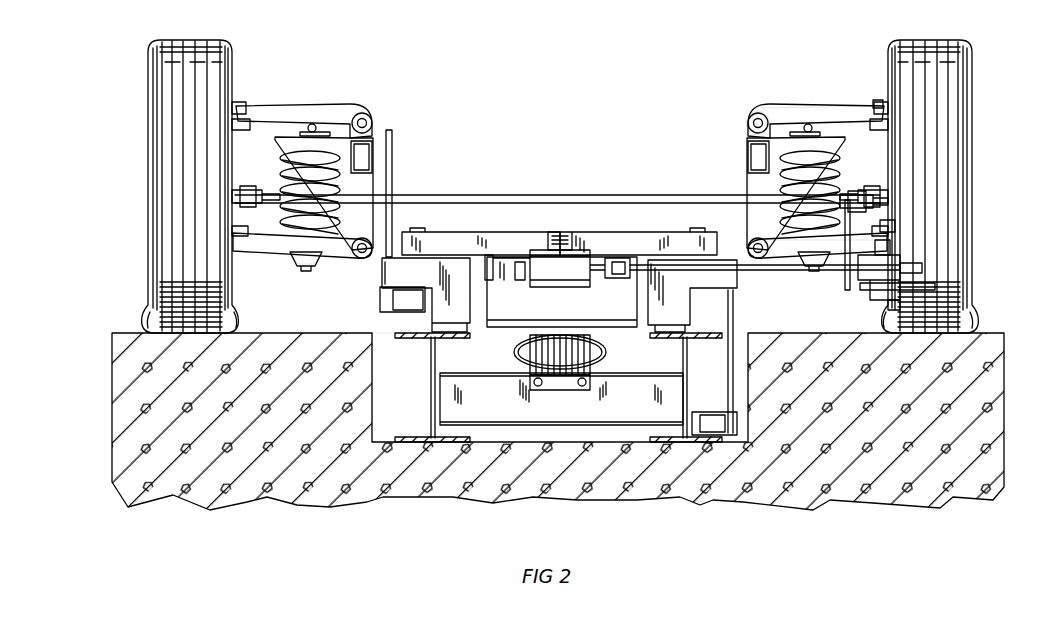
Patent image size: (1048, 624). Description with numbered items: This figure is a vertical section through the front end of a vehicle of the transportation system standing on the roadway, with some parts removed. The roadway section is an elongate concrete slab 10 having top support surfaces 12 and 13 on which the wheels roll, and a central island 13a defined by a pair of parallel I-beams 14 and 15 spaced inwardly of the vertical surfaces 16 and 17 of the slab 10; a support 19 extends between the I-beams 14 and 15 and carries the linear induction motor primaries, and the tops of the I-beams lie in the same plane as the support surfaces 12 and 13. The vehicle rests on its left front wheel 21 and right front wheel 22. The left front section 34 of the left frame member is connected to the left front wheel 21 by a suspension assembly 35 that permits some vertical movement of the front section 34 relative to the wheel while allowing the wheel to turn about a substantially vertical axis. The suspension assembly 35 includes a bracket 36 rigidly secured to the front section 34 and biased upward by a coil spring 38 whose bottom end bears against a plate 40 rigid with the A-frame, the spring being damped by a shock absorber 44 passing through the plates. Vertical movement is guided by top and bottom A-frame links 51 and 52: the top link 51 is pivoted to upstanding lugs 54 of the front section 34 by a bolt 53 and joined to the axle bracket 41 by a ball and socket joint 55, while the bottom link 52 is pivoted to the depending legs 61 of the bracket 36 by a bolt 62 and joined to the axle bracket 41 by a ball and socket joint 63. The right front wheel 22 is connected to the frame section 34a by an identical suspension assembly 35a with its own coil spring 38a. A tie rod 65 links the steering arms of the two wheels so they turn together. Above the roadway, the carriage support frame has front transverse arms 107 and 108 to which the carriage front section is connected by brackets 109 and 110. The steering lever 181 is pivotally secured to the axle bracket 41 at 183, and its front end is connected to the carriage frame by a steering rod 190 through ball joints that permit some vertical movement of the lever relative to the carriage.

The concrete body or slab 10 is at (112, 398).
The top support surface 12 is at (812, 335).
The top support surface 13 is at (302, 330).
The central island 13a is at (432, 352).
The I-beam 14 is at (687, 384).
The I-beam 15 is at (431, 411).
The vertical surface 16 is at (372, 404).
The vertical surface 17 is at (745, 358).
The support 19 is at (519, 425).
The left front wheel 21 is at (976, 100).
The right front wheel 22 is at (146, 100).
The left front section 34 is at (746, 148).
The chassis frame member section 34a is at (373, 158).
The suspension assembly 35 is at (850, 199).
The suspension assembly 35a is at (349, 176).
The bracket 36 is at (738, 220).
The coil spring 38 is at (842, 192).
The coil spring 38a is at (292, 135).
The plate 40 is at (848, 246).
The axle bracket 41 is at (886, 180).
The shock absorber 44 is at (284, 266).
The top A-frame link 51 is at (838, 108).
The bottom A-frame link 52 is at (796, 254).
The shaft or bolt 53 is at (760, 115).
The upstanding lugs 54 is at (748, 138).
The ball and socket joint 55 is at (878, 100).
The depending legs 61 is at (746, 180).
The bolt 62 is at (780, 254).
The ball and socket joint 63 is at (890, 226).
The tie rod 65 is at (553, 195).
The front transverse arm 107 is at (625, 232).
The front transverse arm 108 is at (487, 230).
The bracket 109 is at (625, 270).
The bracket 110 is at (497, 257).
The steering lever 181 is at (935, 288).
The pivot connection 183 is at (894, 312).
The steering rod 190 is at (836, 268).